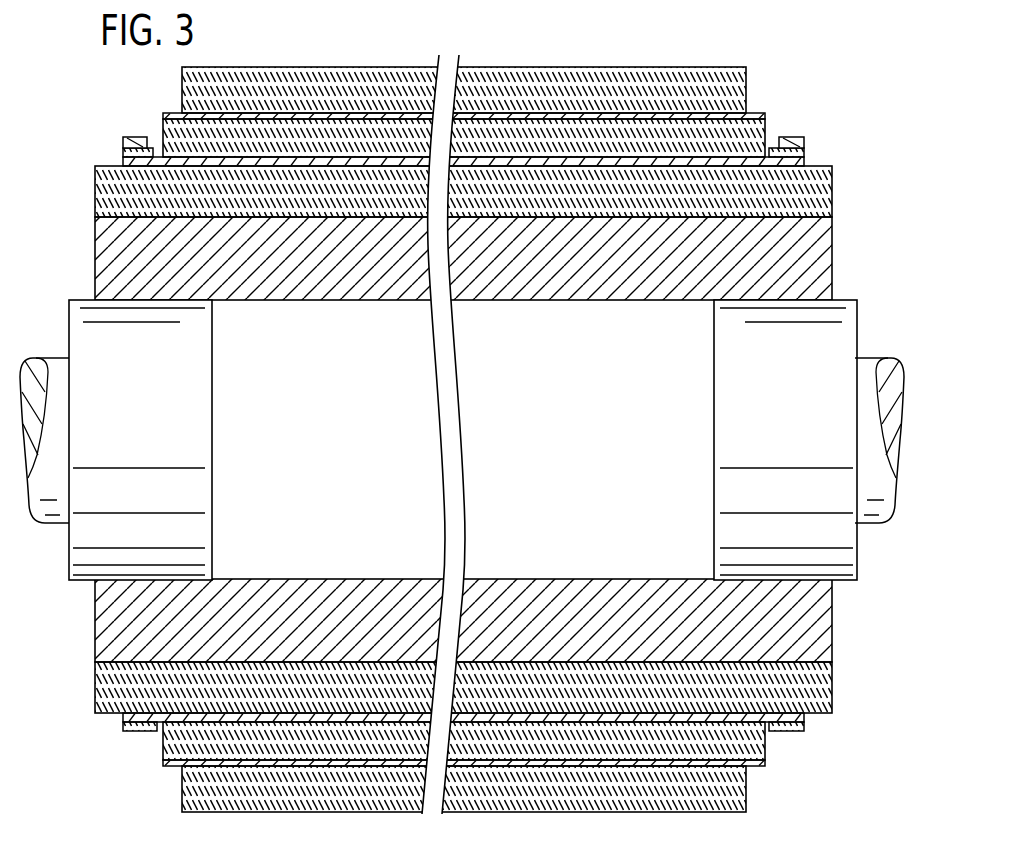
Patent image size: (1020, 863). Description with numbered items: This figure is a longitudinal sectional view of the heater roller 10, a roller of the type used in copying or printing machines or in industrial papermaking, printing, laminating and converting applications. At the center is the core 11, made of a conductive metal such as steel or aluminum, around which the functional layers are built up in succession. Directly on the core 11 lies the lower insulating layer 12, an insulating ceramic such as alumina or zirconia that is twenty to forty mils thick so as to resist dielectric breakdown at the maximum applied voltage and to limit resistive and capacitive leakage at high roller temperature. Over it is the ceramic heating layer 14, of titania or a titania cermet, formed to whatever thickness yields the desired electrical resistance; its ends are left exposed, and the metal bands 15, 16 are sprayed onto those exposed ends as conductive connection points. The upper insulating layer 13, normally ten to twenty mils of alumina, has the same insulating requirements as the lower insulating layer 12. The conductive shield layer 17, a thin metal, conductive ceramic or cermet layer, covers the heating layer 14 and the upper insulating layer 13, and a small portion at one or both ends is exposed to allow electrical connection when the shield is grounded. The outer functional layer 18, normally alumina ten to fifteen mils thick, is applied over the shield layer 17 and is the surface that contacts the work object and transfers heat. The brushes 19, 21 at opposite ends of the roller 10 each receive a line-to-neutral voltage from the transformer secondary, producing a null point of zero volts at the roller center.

The heater roller 10 is at (727, 48).
The core 11 is at (248, 300).
The lower insulating layer 12 is at (95, 200).
The upper insulating layer 13 is at (163, 131).
The ceramic heating layer 14 is at (123, 161).
The metal band 15 is at (806, 152).
The metal band 16 is at (123, 151).
The conductive shield layer 17 is at (752, 113).
The outer functional layer 18 is at (272, 67).
The brush 19 is at (791, 137).
The brush 21 is at (138, 137).